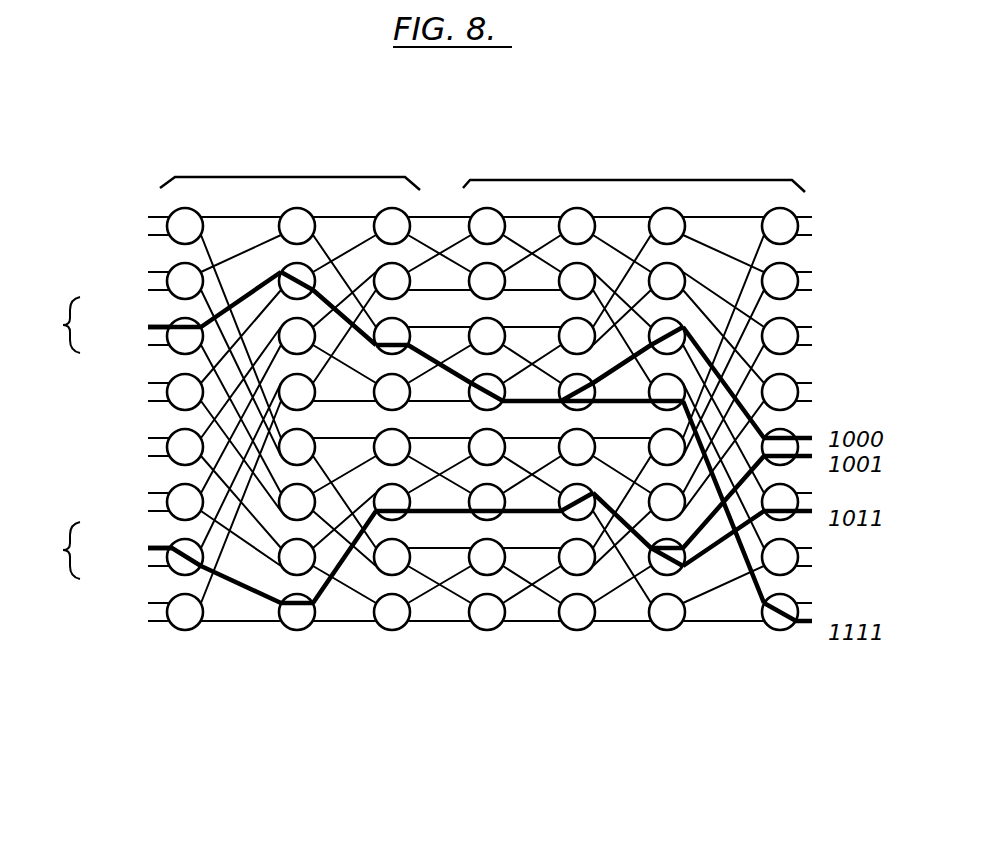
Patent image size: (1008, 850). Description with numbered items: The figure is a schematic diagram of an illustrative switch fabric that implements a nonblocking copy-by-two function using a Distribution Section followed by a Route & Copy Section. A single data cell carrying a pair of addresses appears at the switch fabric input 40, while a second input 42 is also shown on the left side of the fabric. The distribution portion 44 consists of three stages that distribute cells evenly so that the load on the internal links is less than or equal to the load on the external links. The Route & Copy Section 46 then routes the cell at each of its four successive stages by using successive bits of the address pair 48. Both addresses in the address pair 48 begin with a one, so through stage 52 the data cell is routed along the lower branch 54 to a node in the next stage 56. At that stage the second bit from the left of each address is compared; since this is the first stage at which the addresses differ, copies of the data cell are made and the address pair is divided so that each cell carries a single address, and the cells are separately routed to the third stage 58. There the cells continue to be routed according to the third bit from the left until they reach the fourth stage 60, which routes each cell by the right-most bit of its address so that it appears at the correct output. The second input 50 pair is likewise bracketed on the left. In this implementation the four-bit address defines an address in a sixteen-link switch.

The switch fabric input 40 is at (160, 324).
The input line 1001 42 is at (160, 545).
The distribution portion 44 is at (284, 139).
The Route & Copy Section 46 is at (637, 413).
The address pair 48 is at (82, 325).
The input pair 1001/1011 50 is at (82, 552).
The first stage of Route & Copy Section 52 is at (487, 647).
The lower branch 54 is at (505, 405).
The second stage 56 is at (577, 647).
The third stage 58 is at (667, 647).
The fourth stage 60 is at (784, 647).